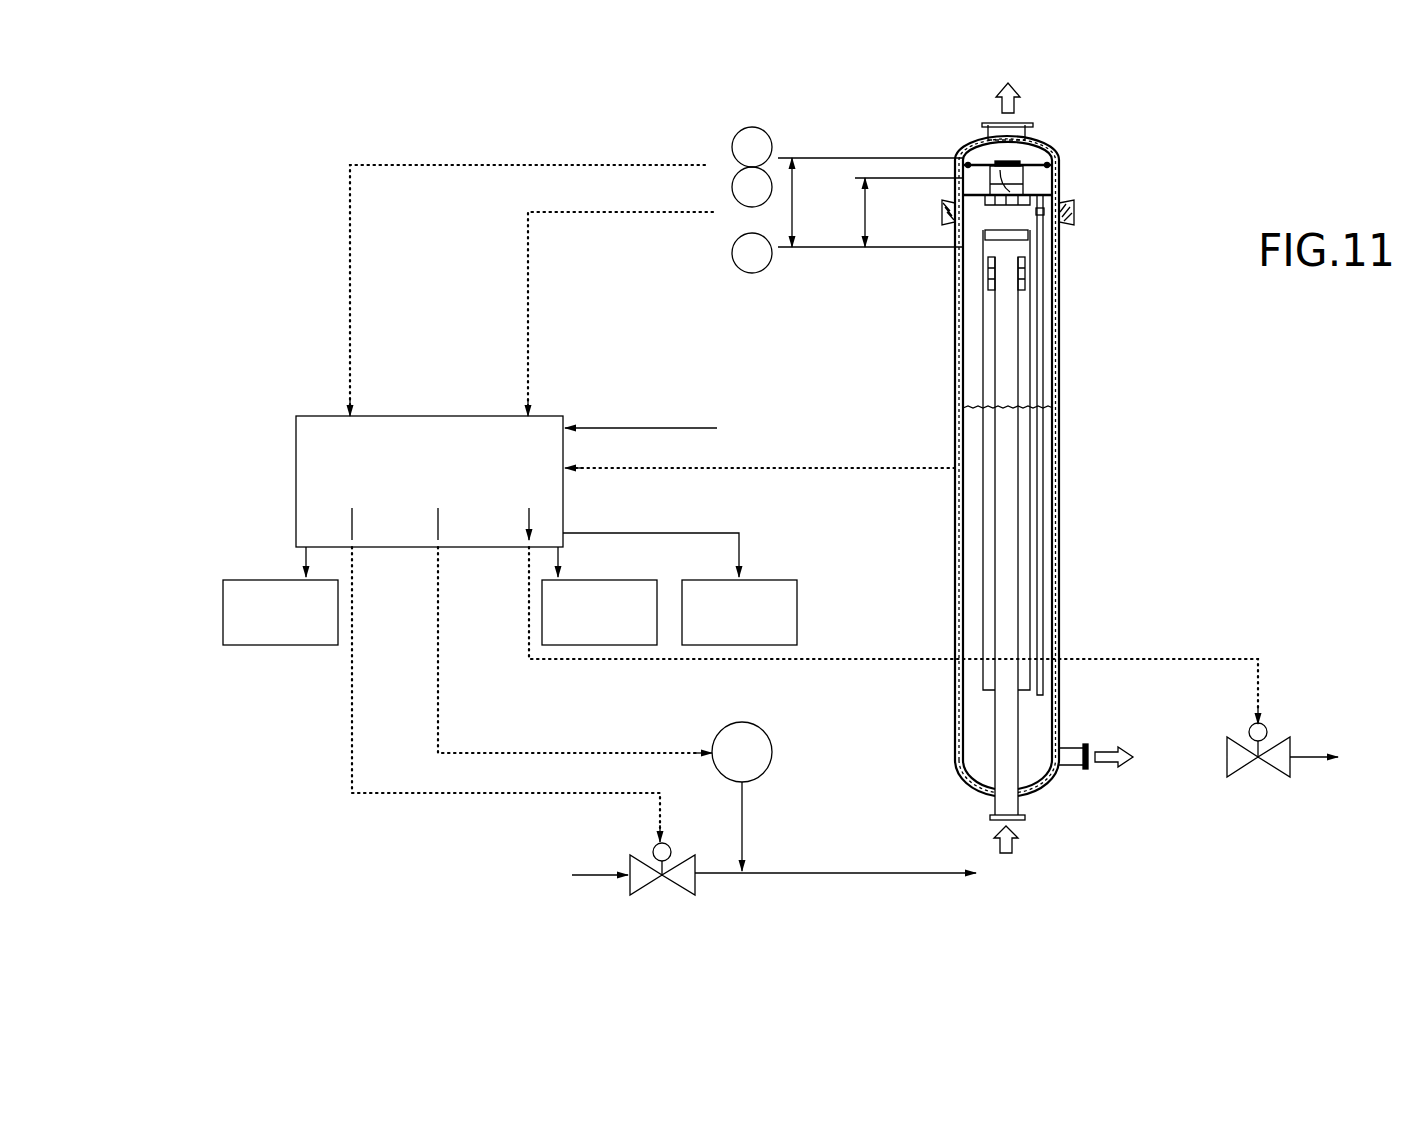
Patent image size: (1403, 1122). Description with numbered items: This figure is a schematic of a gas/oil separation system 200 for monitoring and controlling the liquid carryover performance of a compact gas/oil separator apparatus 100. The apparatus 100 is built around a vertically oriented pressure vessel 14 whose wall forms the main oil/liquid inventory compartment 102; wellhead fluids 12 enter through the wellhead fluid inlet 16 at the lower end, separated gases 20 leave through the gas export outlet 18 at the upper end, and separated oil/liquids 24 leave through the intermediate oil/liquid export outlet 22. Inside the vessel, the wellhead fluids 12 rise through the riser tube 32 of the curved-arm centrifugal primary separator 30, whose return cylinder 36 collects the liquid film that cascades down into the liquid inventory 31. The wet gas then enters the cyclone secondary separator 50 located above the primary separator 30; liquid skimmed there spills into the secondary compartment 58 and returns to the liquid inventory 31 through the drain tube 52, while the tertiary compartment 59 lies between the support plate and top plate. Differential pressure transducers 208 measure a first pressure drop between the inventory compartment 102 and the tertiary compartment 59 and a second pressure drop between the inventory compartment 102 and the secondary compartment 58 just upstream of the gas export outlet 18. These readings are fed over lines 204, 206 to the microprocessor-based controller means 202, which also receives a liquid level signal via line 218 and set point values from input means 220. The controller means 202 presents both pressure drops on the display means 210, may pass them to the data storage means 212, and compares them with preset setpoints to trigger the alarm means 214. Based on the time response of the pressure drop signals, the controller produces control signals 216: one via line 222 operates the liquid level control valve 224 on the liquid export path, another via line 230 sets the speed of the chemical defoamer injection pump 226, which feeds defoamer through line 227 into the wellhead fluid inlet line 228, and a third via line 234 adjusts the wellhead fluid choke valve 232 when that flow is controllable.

The wellhead fluids 12 is at (595, 875).
The pressure vessel 14 is at (1002, 466).
The wellhead fluid inlet 16 is at (1000, 808).
The gas export outlet 18 is at (1012, 132).
The separated gases 20 is at (1015, 100).
The oil/liquid export outlet 22 is at (1064, 768).
The separated oil/liquids 24 is at (1108, 768).
The curved-arm centrifugal force primary separator 30 is at (1048, 460).
The liquid inventory 31 is at (1030, 405).
The riser tube 32 is at (1030, 604).
The return cylinder 36 is at (1045, 316).
The cyclone centrifugal force secondary separator 50 is at (1012, 190).
The drain tube 52 is at (1040, 468).
The secondary compartment 58 is at (988, 155).
The tertiary compartment 59 is at (1040, 180).
The compact gas/oil separator apparatus 100 is at (975, 466).
The main oil/liquid inventory compartment 102 is at (975, 312).
The gas/oil separation system 200 is at (550, 150).
The controller means 202 is at (310, 461).
The input signal line 204 is at (350, 255).
The input signal line 206 is at (528, 292).
The differential pressure transducers 208 is at (715, 150).
The display means 210 is at (258, 580).
The data recording or storage means 212 is at (773, 580).
The alarm means 214 is at (605, 580).
The control signals 216 is at (525, 515).
The liquid level signal line 218 is at (765, 468).
The set point input means 220 is at (695, 428).
The control signal line 222 is at (650, 660).
The liquid level control valve 224 is at (1282, 748).
The chemical defoamer injection pump 226 is at (755, 747).
The defoamer line 227 is at (744, 812).
The wellhead fluid inlet line 228 is at (865, 873).
The control signal line 230 is at (438, 703).
The wellhead fluid choke valve 232 is at (680, 852).
The control signal line 234 is at (350, 697).